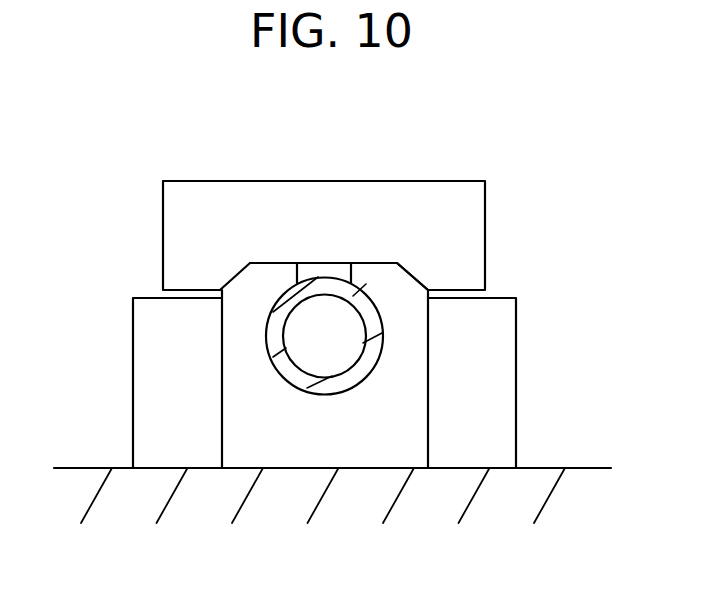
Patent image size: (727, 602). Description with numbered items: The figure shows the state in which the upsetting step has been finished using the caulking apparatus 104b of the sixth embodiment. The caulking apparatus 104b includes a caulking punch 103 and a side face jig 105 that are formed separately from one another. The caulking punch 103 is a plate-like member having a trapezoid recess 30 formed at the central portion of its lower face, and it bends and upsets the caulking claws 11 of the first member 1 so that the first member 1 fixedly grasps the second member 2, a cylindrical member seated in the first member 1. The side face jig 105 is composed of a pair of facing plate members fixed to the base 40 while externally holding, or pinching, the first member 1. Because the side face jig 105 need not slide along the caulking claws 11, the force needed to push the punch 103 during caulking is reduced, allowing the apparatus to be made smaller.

The first member 1 is at (390, 422).
The second member 2 is at (372, 331).
The caulking claws 11 is at (253, 283).
The trapezoid recess 30 is at (370, 276).
The base 40 is at (530, 494).
The caulking punch 103 is at (320, 213).
The caulking apparatus 104b is at (506, 214).
The side face jig 105 is at (168, 365).